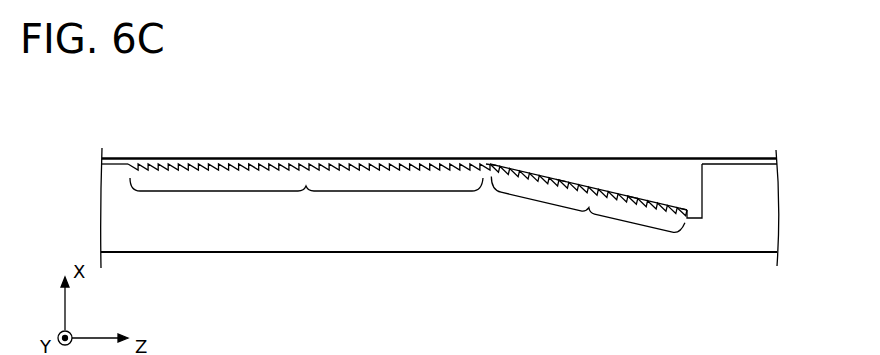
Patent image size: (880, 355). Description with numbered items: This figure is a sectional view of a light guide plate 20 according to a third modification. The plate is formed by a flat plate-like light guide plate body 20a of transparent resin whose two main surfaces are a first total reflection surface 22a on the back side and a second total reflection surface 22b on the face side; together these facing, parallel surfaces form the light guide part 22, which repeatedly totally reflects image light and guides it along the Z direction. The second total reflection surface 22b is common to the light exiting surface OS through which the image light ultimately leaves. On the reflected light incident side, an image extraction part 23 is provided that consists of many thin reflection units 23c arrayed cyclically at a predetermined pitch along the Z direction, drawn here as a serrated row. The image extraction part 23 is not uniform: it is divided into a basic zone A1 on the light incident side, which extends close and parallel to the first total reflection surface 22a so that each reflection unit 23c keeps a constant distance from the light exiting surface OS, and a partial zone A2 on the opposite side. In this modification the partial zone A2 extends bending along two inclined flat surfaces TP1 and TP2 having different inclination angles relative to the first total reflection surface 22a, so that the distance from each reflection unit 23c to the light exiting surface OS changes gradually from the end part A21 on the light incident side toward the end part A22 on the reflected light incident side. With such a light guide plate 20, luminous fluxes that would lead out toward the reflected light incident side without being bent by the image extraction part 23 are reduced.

The light guide plate 20 is at (711, 89).
The light guide plate body 20a is at (233, 246).
The light guide part 22 is at (355, 239).
The first total reflection surface 22a is at (110, 157).
The second total reflection surface 22b is at (130, 254).
The image extraction part 23 is at (340, 154).
The reflection unit 23c is at (262, 171).
The basic zone A1 is at (306, 201).
The partial zone A2 is at (586, 209).
The end part on the light incident part side A21 is at (492, 164).
The end part on the reflected light incident part side A22 is at (683, 205).
The first inclined flat surface TP1 is at (563, 173).
The second inclined flat surface TP2 is at (633, 190).
The light exiting surface OS is at (458, 254).